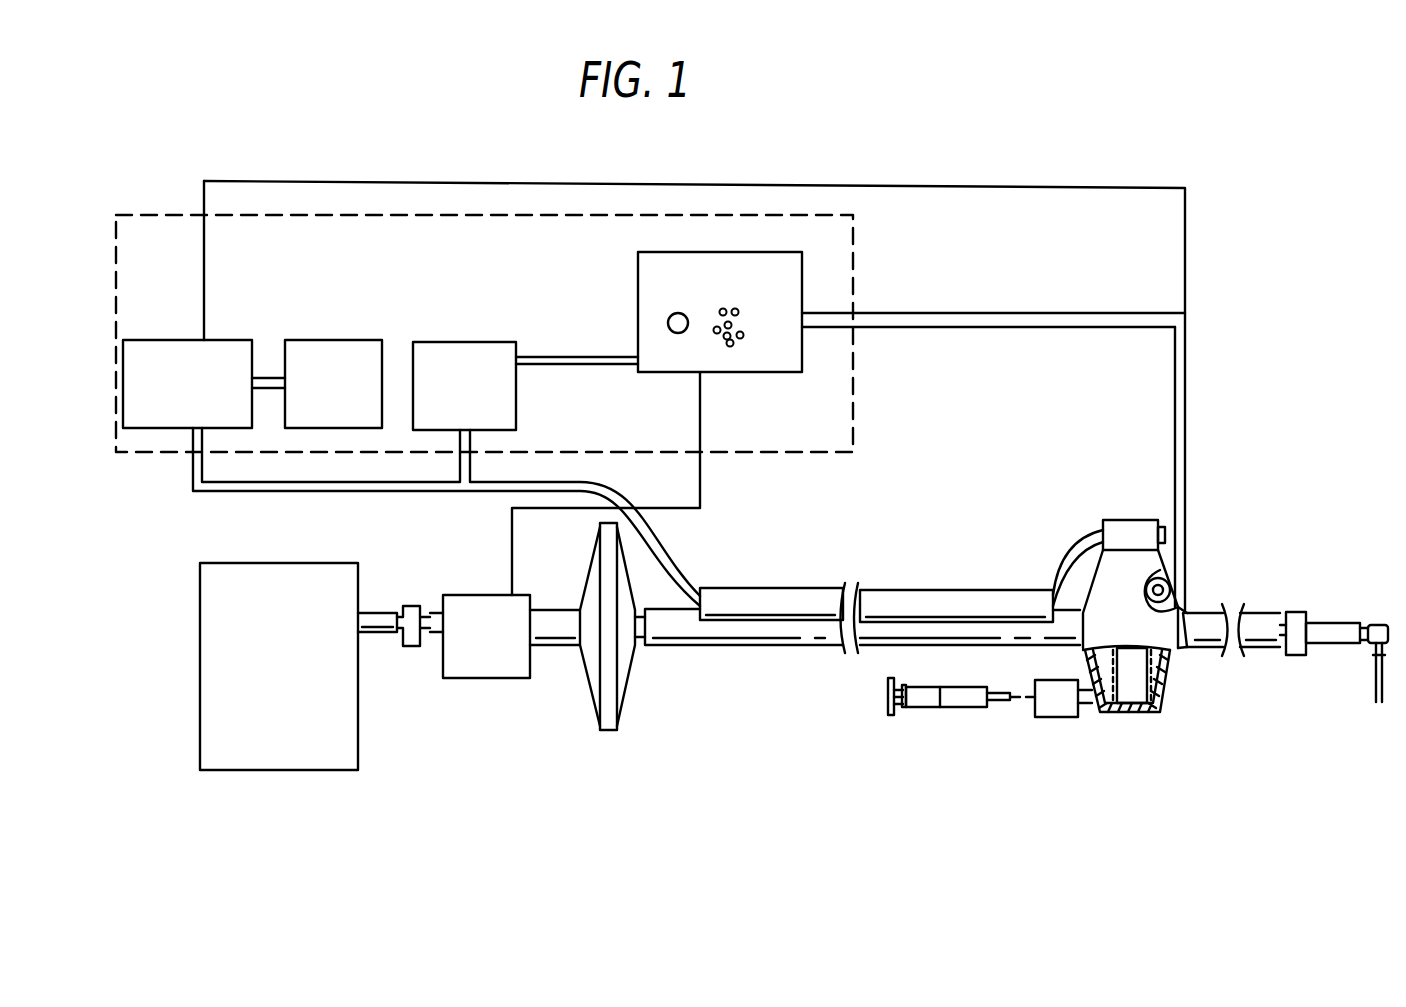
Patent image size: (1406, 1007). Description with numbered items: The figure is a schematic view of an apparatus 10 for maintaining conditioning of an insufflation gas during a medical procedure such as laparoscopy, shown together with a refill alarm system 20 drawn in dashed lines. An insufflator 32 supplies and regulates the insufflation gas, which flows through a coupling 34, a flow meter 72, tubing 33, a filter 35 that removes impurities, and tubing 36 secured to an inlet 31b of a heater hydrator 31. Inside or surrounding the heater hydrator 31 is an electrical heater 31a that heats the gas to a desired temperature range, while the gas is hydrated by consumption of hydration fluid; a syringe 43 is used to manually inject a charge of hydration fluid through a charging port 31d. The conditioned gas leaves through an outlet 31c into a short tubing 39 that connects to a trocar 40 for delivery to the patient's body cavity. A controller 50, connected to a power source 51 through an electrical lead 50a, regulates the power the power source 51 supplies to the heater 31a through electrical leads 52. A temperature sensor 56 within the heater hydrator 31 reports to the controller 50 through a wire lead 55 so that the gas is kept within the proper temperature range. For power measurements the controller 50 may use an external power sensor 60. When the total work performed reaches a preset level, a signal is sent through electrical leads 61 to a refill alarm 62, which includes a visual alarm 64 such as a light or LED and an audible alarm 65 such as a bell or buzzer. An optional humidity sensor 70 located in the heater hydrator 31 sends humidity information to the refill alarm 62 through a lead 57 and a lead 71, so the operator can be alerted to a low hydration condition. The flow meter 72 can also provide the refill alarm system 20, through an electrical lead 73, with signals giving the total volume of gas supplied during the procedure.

The apparatus 10 is at (396, 146).
The refill alarm system 20 is at (695, 215).
The heater hydrator 31 is at (1124, 658).
The electrical heater 31a is at (1170, 706).
The inlet 31b is at (1095, 618).
The outlet 31c is at (1183, 630).
The charging port 31d is at (1045, 716).
The insufflator 32 is at (200, 630).
The tubing 33 is at (535, 646).
The coupling 34 is at (412, 650).
The filter 35 is at (610, 731).
The tubing 36 is at (700, 648).
The tubing 39 is at (1205, 656).
The trocar 40 is at (1375, 636).
The syringe 43 is at (955, 700).
The controller 50 is at (215, 340).
The electrical lead 50a is at (268, 378).
The power source 51 is at (333, 340).
The electrical leads 52 is at (498, 497).
The wire lead 55 is at (1020, 187).
The temperature sensor 56 is at (1188, 612).
The lead 57 is at (1000, 313).
The power sensor 60 is at (452, 342).
The electrical leads 61 is at (566, 355).
The refill alarm 62 is at (770, 252).
The visual alarm 64 is at (668, 318).
The audible alarm 65 is at (746, 323).
The humidity sensor 70 is at (1148, 585).
The lead 71 is at (1175, 403).
The flow meter 72 is at (510, 678).
The electrical lead 73 is at (702, 488).